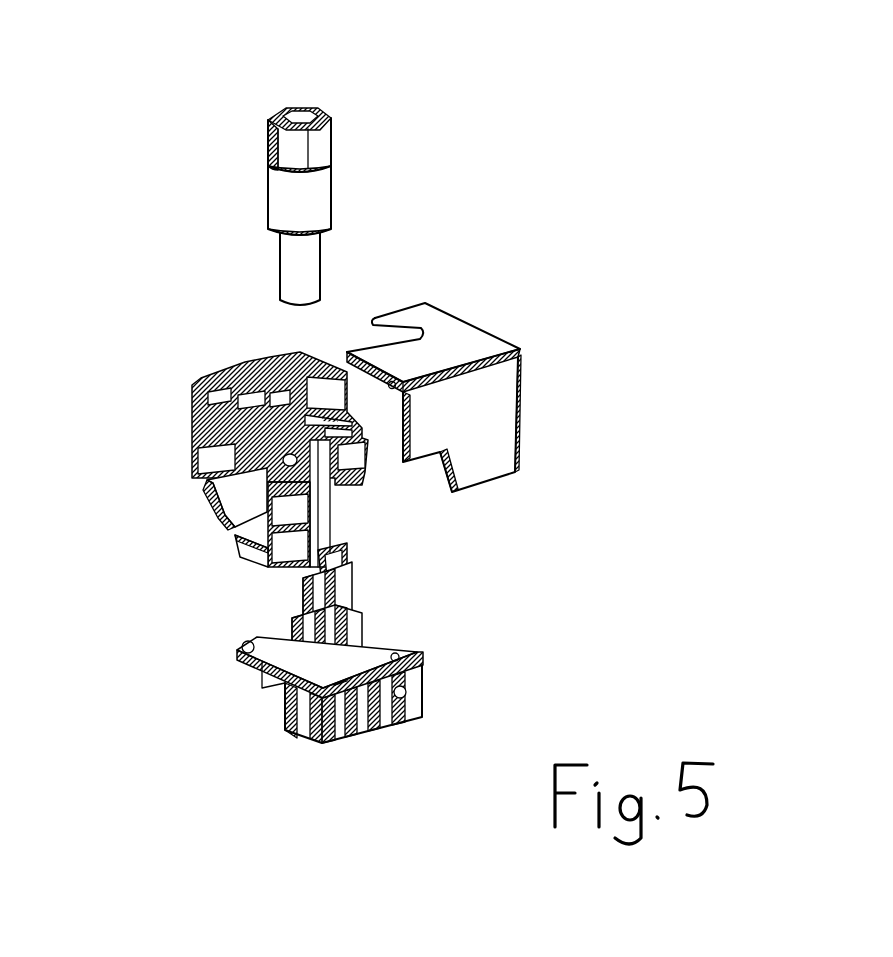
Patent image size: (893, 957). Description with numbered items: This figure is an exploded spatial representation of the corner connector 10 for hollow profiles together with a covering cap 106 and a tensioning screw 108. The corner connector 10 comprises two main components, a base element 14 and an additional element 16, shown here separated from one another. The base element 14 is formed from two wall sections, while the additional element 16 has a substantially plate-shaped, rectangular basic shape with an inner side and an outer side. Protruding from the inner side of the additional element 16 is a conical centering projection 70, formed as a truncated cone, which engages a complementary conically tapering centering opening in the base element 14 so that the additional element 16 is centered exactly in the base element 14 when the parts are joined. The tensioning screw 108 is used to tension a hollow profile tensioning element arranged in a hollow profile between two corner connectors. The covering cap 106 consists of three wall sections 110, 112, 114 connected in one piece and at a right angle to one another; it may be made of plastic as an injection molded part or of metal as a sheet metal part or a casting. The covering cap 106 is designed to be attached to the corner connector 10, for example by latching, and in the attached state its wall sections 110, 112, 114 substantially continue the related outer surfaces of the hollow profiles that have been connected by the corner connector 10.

The corner connector 10 is at (162, 306).
The base element 14 is at (178, 492).
The additional element 16 is at (420, 632).
The centering projection 70 is at (243, 648).
The covering cap 106 is at (553, 355).
The tensioning screw 108 is at (373, 191).
The wall section 110 is at (449, 330).
The wall section 112 is at (498, 441).
The wall section 114 is at (393, 392).